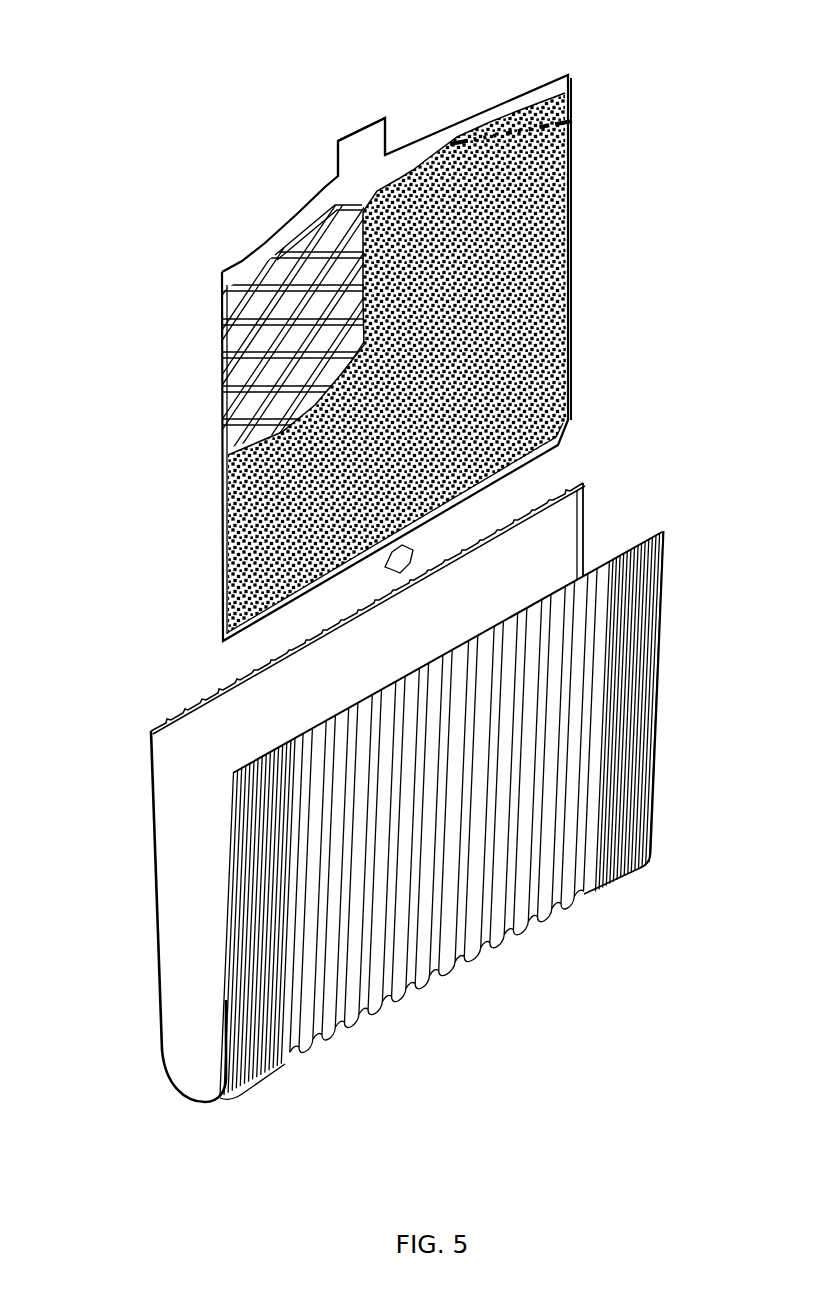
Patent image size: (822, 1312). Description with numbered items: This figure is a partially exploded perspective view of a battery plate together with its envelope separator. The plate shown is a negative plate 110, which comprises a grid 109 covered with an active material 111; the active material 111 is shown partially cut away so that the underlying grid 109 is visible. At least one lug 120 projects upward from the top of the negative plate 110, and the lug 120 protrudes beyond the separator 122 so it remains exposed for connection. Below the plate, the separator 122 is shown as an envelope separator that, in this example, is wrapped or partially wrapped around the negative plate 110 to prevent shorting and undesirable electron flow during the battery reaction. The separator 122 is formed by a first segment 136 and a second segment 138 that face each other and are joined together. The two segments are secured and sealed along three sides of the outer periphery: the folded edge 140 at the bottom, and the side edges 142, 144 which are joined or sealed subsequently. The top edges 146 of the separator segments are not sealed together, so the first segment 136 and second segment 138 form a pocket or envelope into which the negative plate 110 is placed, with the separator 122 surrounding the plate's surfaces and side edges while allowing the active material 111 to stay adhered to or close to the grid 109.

The grid 109 is at (457, 136).
The negative plate 110 is at (419, 337).
The active material 111 is at (527, 303).
The lug 120 is at (363, 128).
The separator 122 is at (403, 786).
The first segment 136 is at (412, 818).
The second segment 138 is at (299, 792).
The folded edge 140 is at (370, 1017).
The side edge 142 is at (220, 746).
The side edge 144 is at (657, 756).
The top edges 146 is at (590, 573).